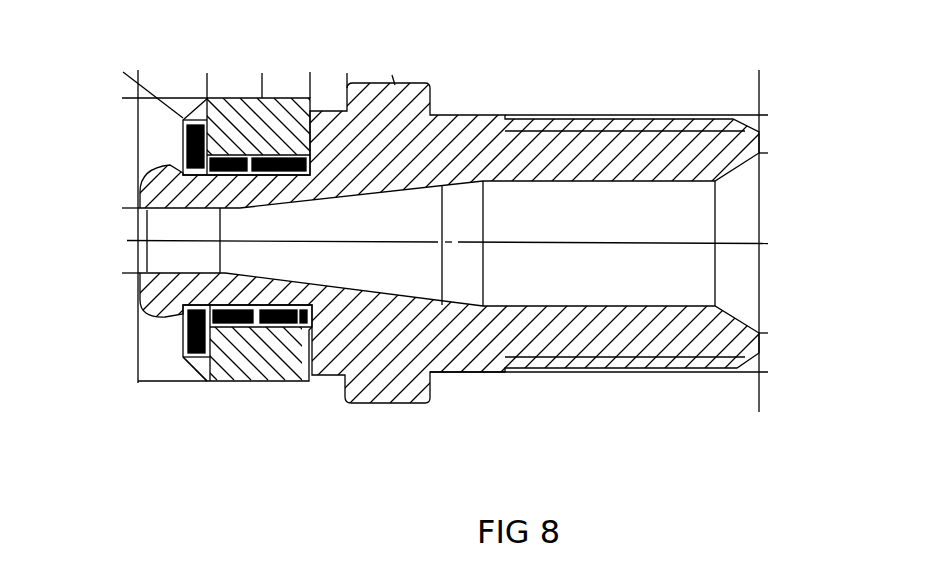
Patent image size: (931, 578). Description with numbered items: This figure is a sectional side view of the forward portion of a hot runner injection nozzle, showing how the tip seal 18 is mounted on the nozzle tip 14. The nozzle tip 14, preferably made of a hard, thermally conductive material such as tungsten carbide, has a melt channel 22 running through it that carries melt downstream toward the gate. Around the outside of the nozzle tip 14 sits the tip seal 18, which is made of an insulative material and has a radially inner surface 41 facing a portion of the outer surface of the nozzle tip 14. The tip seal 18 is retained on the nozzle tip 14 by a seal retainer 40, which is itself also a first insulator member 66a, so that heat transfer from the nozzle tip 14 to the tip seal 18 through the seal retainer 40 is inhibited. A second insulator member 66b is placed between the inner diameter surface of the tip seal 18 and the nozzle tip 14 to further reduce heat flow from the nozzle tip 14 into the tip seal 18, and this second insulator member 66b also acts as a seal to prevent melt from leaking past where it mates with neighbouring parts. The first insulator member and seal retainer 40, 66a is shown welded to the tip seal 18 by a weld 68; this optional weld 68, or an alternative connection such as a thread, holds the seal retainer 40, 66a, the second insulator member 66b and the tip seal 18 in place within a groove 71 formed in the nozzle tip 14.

The nozzle tip 14 is at (584, 340).
The tip seal 18 is at (227, 360).
The melt channel 22 is at (670, 291).
The seal retainer 40 is at (180, 362).
The radially inner surface 41 is at (255, 305).
The insulator member 66a is at (184, 337).
The second insulator member 66b is at (274, 328).
The weld 68 is at (198, 363).
The groove 71 is at (303, 329).